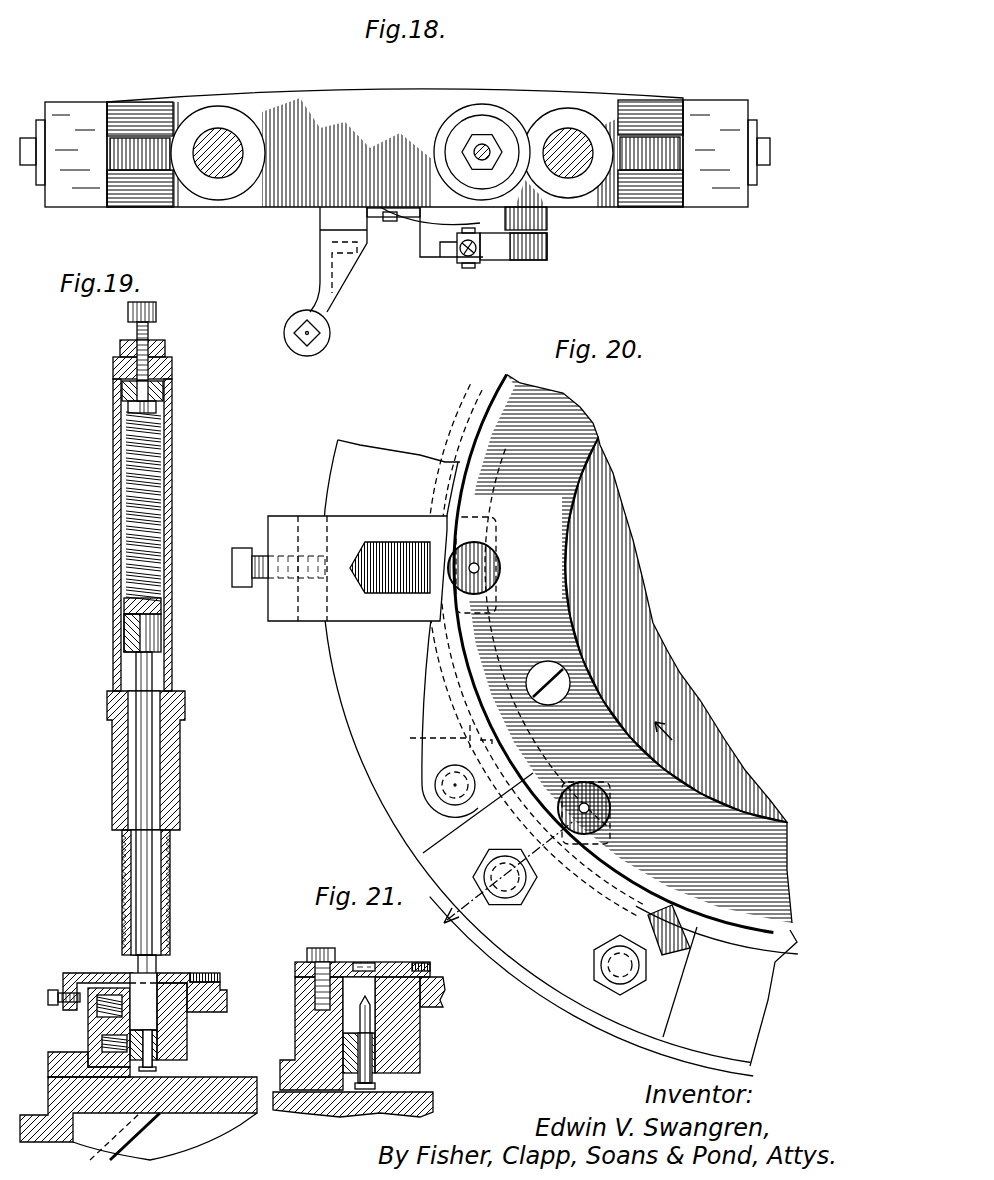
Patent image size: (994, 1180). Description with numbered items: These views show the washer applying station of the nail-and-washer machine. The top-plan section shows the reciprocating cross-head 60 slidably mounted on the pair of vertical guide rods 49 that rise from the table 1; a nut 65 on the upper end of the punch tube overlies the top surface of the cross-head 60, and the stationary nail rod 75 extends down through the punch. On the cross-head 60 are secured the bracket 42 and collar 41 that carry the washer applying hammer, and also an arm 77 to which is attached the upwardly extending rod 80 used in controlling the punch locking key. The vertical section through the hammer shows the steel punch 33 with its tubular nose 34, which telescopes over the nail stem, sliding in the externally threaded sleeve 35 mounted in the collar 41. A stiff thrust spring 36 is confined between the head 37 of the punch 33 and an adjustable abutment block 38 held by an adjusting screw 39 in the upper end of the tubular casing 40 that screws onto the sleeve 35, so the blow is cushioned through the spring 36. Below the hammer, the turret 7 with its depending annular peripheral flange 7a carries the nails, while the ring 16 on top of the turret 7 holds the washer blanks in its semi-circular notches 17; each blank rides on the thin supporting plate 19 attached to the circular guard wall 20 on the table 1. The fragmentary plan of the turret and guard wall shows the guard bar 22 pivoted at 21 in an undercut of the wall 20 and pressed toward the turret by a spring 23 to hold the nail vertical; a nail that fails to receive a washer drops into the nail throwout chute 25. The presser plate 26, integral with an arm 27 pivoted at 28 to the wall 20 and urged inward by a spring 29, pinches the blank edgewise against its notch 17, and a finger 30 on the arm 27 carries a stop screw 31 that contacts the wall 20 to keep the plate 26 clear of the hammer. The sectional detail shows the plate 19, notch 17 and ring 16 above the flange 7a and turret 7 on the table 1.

In FIG. 21, the table 1 is at (424, 1100).
In FIG. 19, the turret 7 is at (228, 998).
In FIG. 21, the turret 7 is at (445, 994).
In FIG. 19, the annular peripheral flange 7a is at (190, 1060).
In FIG. 21, the annular peripheral flange 7a is at (404, 1050).
In FIG. 18, the ring 16 is at (468, 130).
In FIG. 19, the ring 16 is at (162, 985).
In FIG. 21, the ring 16 is at (406, 962).
In FIG. 20, the ring 16 is at (550, 632).
In FIG. 21, the semi-circular notch 17 is at (372, 962).
In FIG. 20, the semi-circular notch 17 is at (493, 553).
In FIG. 21, the supporting plate 19 is at (345, 962).
In FIG. 20, the supporting plate 19 is at (232, 568).
In FIG. 19, the guard wall 20 is at (92, 1035).
In FIG. 21, the guard wall 20 is at (297, 1022).
In FIG. 20, the guard wall 20 is at (596, 890).
In FIG. 20, the pivot 21 is at (539, 833).
In FIG. 19, the guard bar 22 is at (165, 1047).
In FIG. 20, the guard bar 22 is at (500, 604).
In FIG. 19, the spring 23 is at (116, 1055).
In FIG. 19, the nail throwout chute 25 is at (150, 1146).
In FIG. 19, the presser plate 26 is at (136, 970).
In FIG. 20, the arm 27 is at (432, 705).
In FIG. 20, the pivot 28 is at (436, 786).
In FIG. 19, the spring 29 is at (90, 1005).
In FIG. 20, the spring 29 is at (390, 540).
In FIG. 19, the finger 30 is at (80, 973).
In FIG. 20, the finger 30 is at (318, 612).
In FIG. 19, the stop screw 31 is at (52, 992).
In FIG. 20, the stop screw 31 is at (245, 580).
In FIG. 19, the punch 33 is at (150, 852).
In FIG. 19, the tubular nose 34 is at (213, 972).
In FIG. 19, the sleeve 35 is at (172, 879).
In FIG. 19, the thrust spring 36 is at (123, 595).
In FIG. 19, the head 37 is at (124, 636).
In FIG. 19, the abutment block 38 is at (165, 390).
In FIG. 18, the adjusting screw 39 is at (298, 340).
In FIG. 19, the adjusting screw 39 is at (158, 330).
In FIG. 19, the tubular casing 40 is at (172, 491).
In FIG. 18, the collar 41 is at (326, 328).
In FIG. 19, the collar 41 is at (182, 750).
In FIG. 18, the bracket 42 is at (365, 250).
In FIG. 18, the guide rod 49 is at (225, 132).
In FIG. 18, the reciprocating cross-head 60 is at (325, 104).
In FIG. 18, the nut 65 is at (448, 150).
In FIG. 18, the nail rod 75 is at (483, 142).
In FIG. 18, the arm 77 is at (497, 252).
In FIG. 18, the rod 80 is at (465, 263).